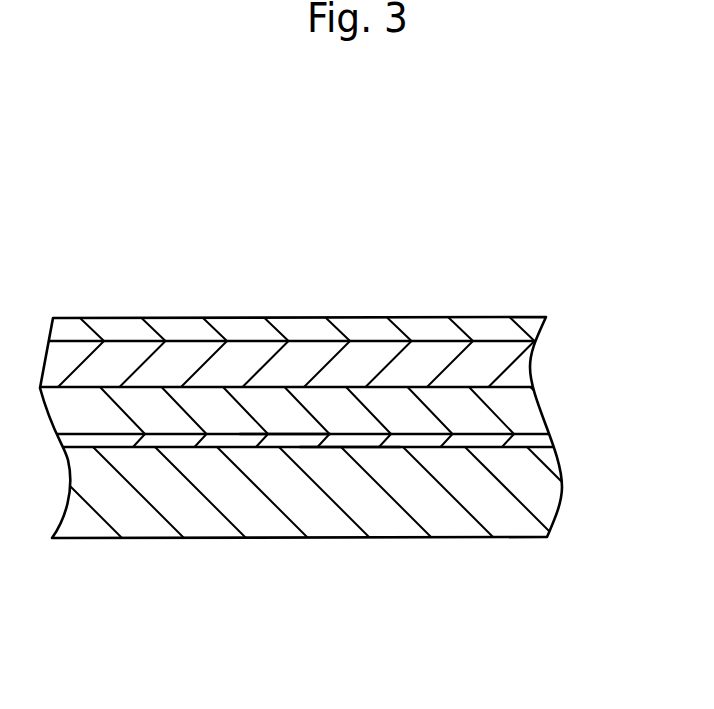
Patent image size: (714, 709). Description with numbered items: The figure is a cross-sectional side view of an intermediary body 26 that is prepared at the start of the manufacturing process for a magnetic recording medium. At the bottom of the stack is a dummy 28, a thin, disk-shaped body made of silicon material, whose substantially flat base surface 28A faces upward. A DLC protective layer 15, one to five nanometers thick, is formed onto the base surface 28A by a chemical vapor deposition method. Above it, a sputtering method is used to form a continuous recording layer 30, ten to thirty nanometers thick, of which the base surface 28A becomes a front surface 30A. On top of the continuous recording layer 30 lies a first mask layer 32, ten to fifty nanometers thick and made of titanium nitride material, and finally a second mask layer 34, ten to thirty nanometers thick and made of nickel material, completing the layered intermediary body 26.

The intermediary body 26 is at (253, 245).
The second mask layer 34 is at (550, 328).
The first mask layer 32 is at (530, 362).
The continuous recording layer 30 is at (542, 408).
The DLC protective layer 15 is at (552, 438).
The dummy 28 is at (562, 497).
The base surface 28A is at (343, 447).
The front surface 30A is at (283, 434).